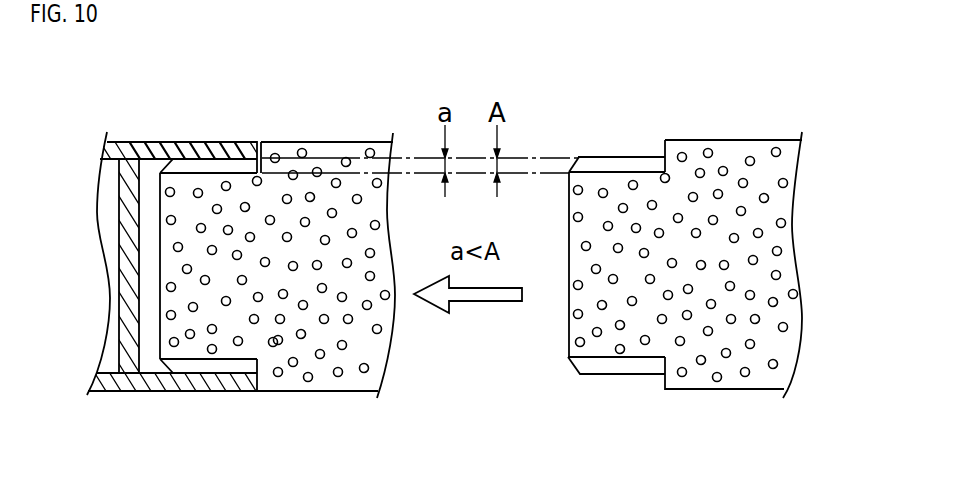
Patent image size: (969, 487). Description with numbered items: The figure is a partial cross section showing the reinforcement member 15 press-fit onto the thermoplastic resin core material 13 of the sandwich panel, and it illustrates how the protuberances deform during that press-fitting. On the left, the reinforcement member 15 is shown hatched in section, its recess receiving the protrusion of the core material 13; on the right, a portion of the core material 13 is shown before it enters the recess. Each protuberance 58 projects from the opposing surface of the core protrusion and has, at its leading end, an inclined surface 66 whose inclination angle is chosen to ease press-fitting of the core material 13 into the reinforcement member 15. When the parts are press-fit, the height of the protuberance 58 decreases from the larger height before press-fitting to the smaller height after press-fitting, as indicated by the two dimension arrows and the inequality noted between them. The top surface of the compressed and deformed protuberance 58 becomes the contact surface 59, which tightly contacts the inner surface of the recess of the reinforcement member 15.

The thermoplastic resin core material 13 is at (745, 277).
The reinforcement member 15 is at (160, 148).
The protuberance 58 is at (625, 163).
The contact surface 59 is at (220, 157).
The inclined surface 66 is at (569, 168).